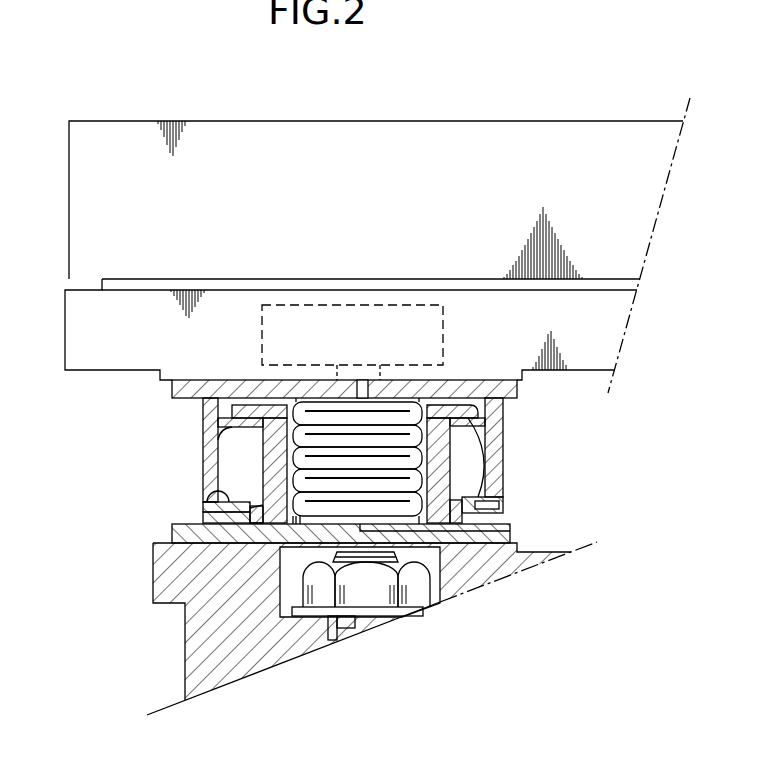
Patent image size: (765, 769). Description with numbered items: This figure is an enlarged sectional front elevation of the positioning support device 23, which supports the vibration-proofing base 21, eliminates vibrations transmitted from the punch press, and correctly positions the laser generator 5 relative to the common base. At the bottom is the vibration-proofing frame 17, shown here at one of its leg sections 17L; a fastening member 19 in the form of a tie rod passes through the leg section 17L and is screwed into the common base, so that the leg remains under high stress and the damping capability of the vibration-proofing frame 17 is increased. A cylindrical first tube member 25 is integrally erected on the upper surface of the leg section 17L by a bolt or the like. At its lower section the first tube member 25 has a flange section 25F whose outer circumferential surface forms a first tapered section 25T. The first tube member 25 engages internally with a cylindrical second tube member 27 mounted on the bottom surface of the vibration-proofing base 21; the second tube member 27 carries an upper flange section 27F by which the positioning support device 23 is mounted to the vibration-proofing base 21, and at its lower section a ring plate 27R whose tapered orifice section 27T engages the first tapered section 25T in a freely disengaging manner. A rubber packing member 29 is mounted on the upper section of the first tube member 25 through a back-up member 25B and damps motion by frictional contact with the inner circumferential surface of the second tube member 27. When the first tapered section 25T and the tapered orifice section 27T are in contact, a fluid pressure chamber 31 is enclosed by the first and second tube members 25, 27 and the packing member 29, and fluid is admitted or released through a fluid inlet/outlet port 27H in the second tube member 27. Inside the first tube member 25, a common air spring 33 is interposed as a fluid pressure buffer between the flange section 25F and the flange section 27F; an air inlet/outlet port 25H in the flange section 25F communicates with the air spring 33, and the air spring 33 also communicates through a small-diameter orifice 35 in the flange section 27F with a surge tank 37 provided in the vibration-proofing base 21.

The laser generator 5 is at (357, 208).
The vibration-proofing frame 17 is at (338, 628).
The leg section 17L is at (197, 644).
The fastening member 19 is at (352, 620).
The vibration-proofing base 21 is at (69, 332).
The positioning support device 23 is at (327, 536).
The first tube member 25 is at (324, 537).
The back-up member 25B is at (262, 410).
The first tapered section 25T is at (250, 520).
The flange section 25F is at (172, 542).
The air inlet/outlet port 25H is at (512, 548).
The second tube member 27 is at (338, 465).
The flange section 27F is at (180, 399).
The ring plate 27R is at (205, 494).
The tapered orifice section 27T is at (205, 513).
The fluid inlet/outlet port 27H is at (503, 504).
The packing member 29 is at (497, 452).
The fluid pressure chamber 31 is at (228, 463).
The air spring 33 is at (280, 517).
The small-diameter orifice 35 is at (365, 392).
The surge tank 37 is at (443, 326).